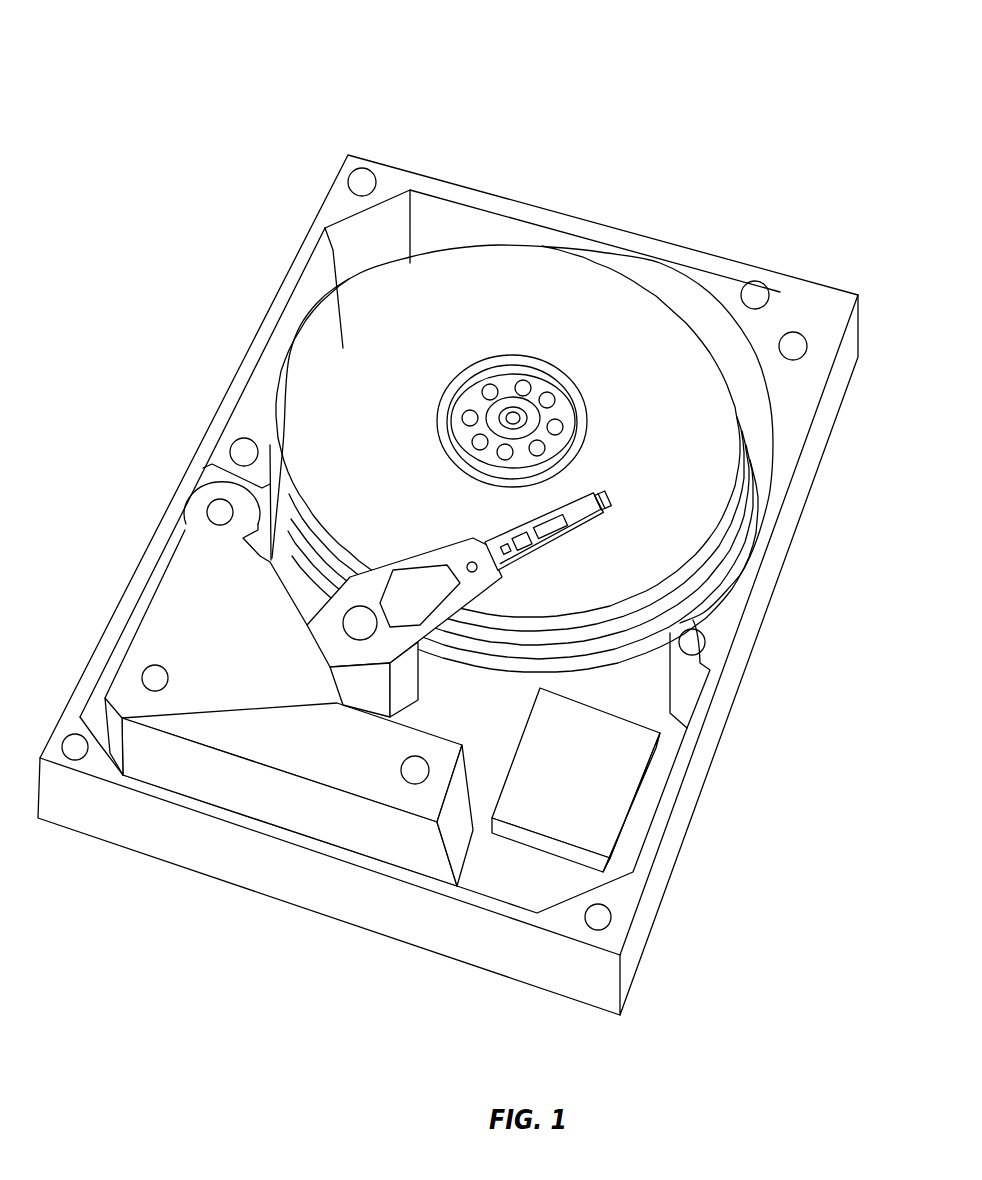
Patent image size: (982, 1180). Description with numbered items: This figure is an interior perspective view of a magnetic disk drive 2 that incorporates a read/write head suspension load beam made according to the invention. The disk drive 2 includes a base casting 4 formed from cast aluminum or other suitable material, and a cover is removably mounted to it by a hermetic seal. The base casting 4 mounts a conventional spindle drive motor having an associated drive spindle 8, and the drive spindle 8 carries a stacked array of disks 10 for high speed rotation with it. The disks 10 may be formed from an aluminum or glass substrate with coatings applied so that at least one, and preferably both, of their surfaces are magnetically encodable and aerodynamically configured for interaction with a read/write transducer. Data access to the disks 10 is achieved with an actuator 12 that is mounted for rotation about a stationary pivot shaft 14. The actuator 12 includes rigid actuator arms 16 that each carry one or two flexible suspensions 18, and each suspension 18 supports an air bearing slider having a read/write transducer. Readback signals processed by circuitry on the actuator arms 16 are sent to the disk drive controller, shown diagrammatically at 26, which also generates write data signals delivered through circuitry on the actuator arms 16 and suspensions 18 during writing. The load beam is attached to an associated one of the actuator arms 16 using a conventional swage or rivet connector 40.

The disk drive 2 is at (462, 510).
The base casting 4 is at (827, 430).
The drive spindle 8 is at (513, 413).
The disks 10 is at (343, 350).
The actuator 12 is at (358, 598).
The pivot shaft 14 is at (404, 594).
The actuator arms 16 is at (442, 652).
The suspensions 18 is at (640, 518).
The disk drive controller 26 is at (598, 713).
The swage or rivet connector 40 is at (473, 562).